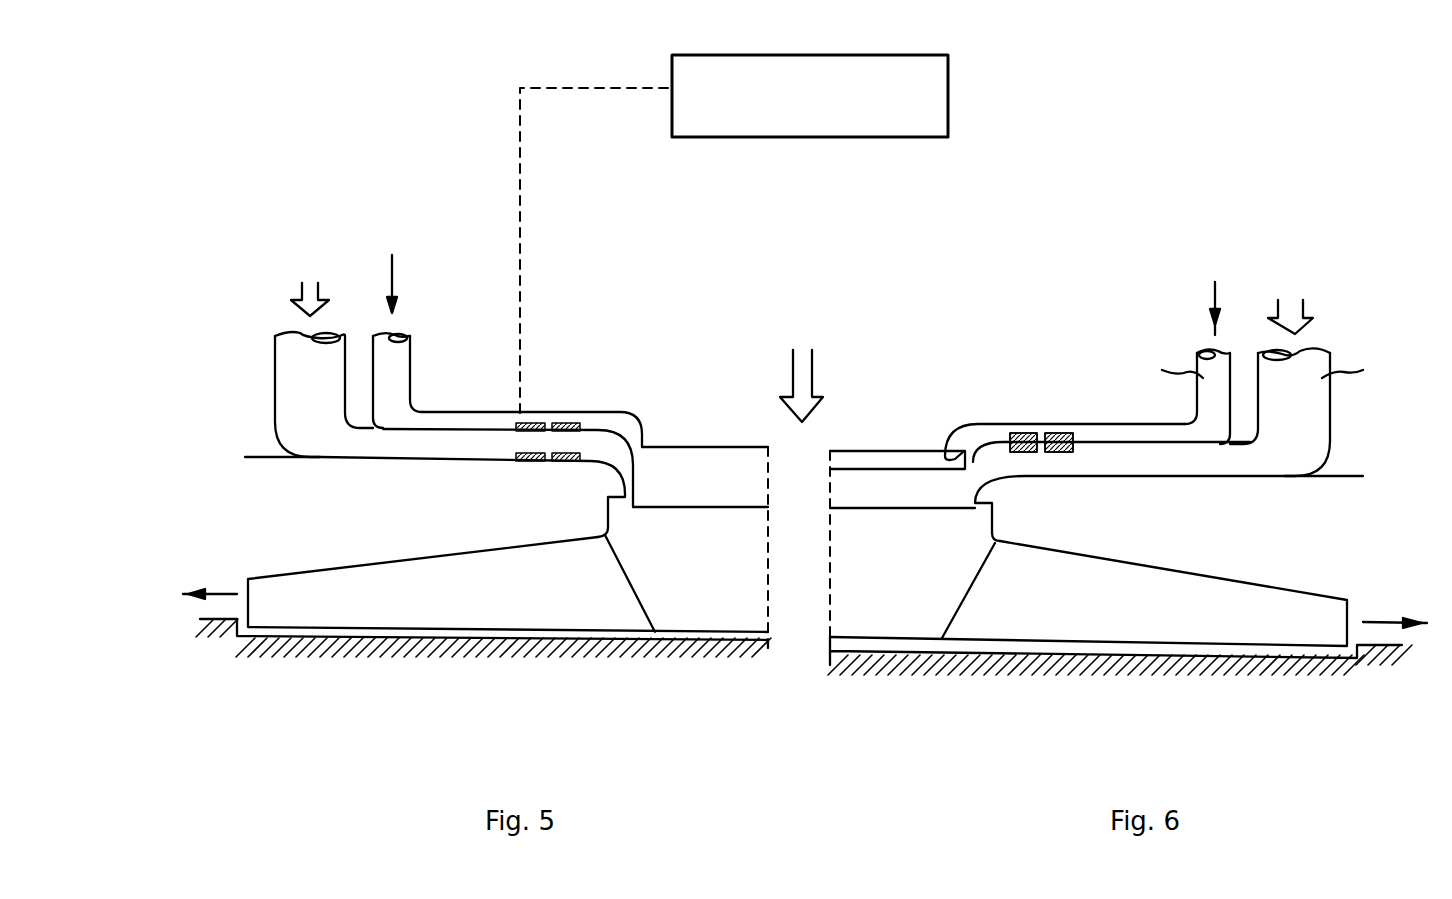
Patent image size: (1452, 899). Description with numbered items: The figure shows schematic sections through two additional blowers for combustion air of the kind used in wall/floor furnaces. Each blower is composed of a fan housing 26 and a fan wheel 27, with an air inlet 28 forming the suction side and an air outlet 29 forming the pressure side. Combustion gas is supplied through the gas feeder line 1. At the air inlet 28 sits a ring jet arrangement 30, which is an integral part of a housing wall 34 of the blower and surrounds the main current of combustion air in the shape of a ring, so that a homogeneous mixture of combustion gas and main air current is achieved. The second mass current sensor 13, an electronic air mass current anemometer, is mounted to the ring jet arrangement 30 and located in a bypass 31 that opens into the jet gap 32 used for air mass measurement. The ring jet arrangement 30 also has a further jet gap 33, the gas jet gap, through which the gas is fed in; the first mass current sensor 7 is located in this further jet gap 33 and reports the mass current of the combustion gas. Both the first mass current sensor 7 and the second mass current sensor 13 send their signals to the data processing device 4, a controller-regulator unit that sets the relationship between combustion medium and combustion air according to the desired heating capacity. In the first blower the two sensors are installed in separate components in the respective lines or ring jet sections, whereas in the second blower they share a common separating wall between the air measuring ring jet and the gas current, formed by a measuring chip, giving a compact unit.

In FIG. 5, the gas feeder line 1 is at (282, 358).
In FIG. 5, the data processing device 4 is at (734, 234).
In FIG. 5, the first mass current sensor 7 is at (547, 468).
In FIG. 6, the first mass current sensor 7 is at (951, 470).
In FIG. 5, the second mass current sensor 13 is at (548, 419).
In FIG. 6, the second mass current sensor 13 is at (1041, 442).
In FIG. 5, the fan housing 26 is at (322, 650).
In FIG. 6, the fan housing 26 is at (1240, 673).
In FIG. 5, the fan wheel 27 is at (423, 577).
In FIG. 6, the fan wheel 27 is at (1212, 599).
In FIG. 6, the air inlet 28 is at (860, 433).
In FIG. 5, the air outlet 29 is at (190, 612).
In FIG. 6, the air outlet 29 is at (1387, 610).
In FIG. 5, the ring jet arrangement 30 is at (449, 382).
In FIG. 6, the ring jet arrangement 30 is at (1034, 404).
In FIG. 5, the bypass 31 is at (488, 412).
In FIG. 5, the jet gap 32 is at (642, 450).
In FIG. 5, the further jet gap 33 is at (636, 506).
In FIG. 5, the housing wall 34 is at (250, 456).
In FIG. 6, the housing wall 34 is at (1333, 477).